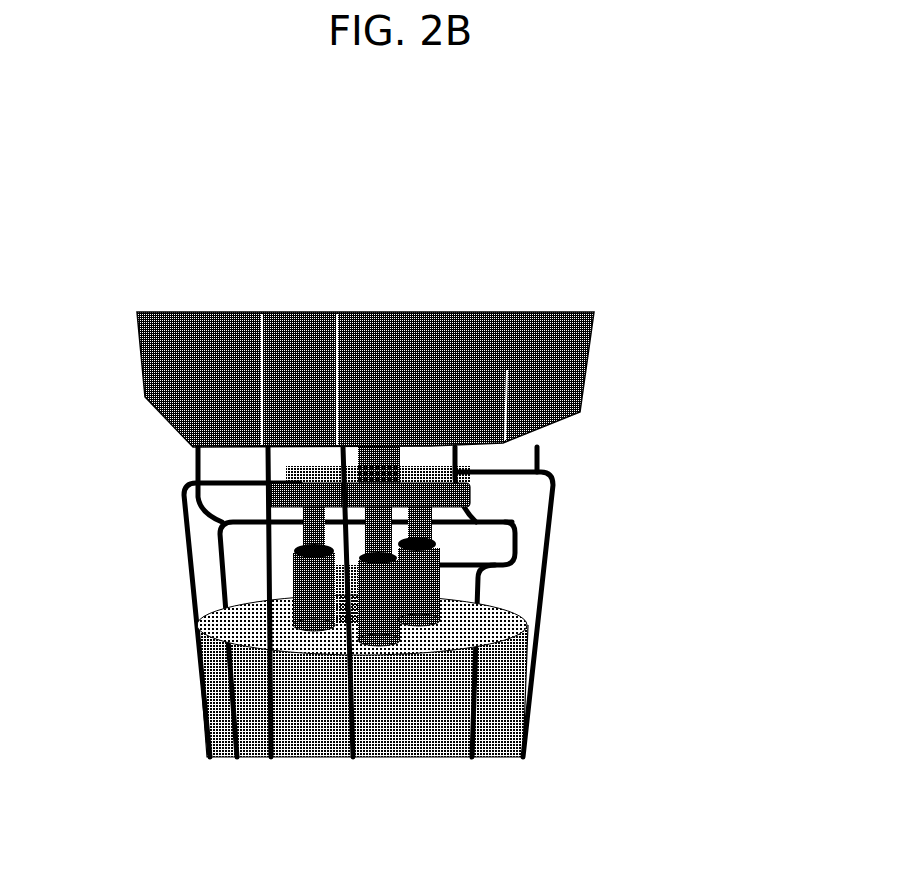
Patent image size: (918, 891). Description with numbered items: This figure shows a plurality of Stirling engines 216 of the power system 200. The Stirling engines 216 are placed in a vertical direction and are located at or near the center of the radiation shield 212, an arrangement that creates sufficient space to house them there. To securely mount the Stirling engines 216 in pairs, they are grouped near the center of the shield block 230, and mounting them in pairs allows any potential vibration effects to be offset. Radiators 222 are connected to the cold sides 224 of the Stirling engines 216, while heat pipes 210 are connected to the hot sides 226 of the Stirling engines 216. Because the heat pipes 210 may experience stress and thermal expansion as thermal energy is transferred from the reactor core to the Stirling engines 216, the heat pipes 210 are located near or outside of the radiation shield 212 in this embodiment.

The power system 200 is at (110, 162).
The heat pipes 210 is at (192, 677).
The radiation shield 212 is at (433, 733).
The Stirling engines 216 is at (300, 578).
The radiators 222 is at (583, 378).
The cold sides 224 is at (280, 490).
The hot sides 226 is at (445, 543).
The shield block 230 is at (445, 625).